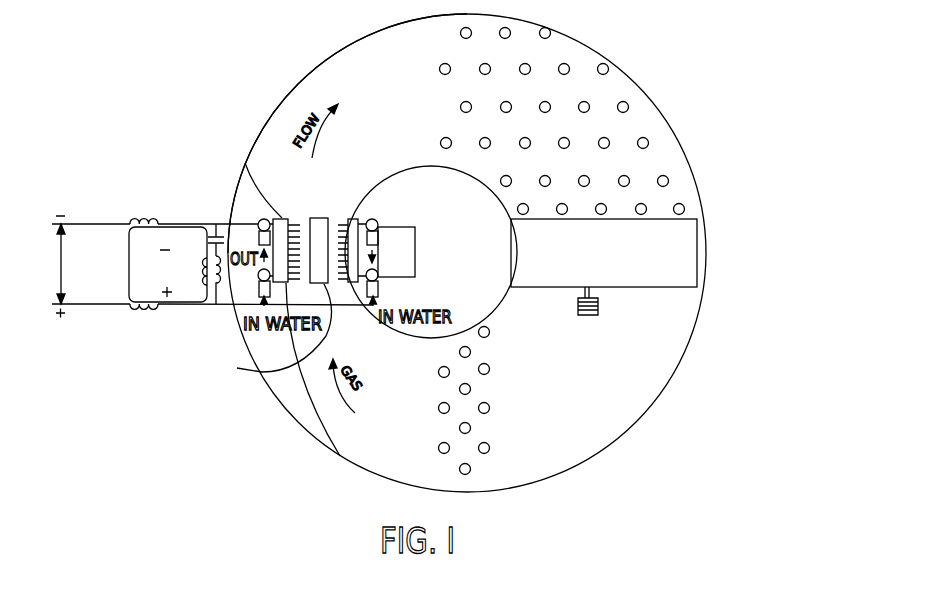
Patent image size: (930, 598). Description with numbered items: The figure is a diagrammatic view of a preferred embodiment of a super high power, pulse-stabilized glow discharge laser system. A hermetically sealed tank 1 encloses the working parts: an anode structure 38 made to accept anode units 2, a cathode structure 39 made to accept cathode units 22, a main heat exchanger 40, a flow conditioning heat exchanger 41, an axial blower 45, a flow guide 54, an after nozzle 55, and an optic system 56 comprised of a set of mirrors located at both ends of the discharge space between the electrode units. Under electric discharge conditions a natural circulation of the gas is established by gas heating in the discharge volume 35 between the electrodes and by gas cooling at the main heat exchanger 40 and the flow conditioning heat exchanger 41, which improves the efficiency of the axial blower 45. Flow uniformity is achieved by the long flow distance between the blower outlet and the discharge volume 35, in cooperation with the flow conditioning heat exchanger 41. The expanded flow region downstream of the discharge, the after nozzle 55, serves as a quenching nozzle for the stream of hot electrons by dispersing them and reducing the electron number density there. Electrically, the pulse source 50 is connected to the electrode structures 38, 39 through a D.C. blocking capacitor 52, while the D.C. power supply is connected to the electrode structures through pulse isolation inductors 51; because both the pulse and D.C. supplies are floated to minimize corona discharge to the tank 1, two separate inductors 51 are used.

The hermetically sealed tank 1 is at (672, 375).
The anode units 2 is at (263, 216).
The cathode units 22 is at (358, 221).
The discharge volume 35 is at (318, 217).
The anode structure 38 is at (258, 227).
The cathode structure 39 is at (418, 258).
The main heat exchanger 40 is at (668, 153).
The flow conditioning heat exchanger 41 is at (472, 469).
The axial blower 45 is at (698, 254).
The pulse generator 50 is at (198, 292).
The pulse isolation inductors 51 is at (142, 308).
The D.C. blocking capacitor 52 is at (207, 238).
The flow guide 54 is at (498, 307).
The after nozzle 55 is at (295, 112).
The optic system 56 is at (271, 332).